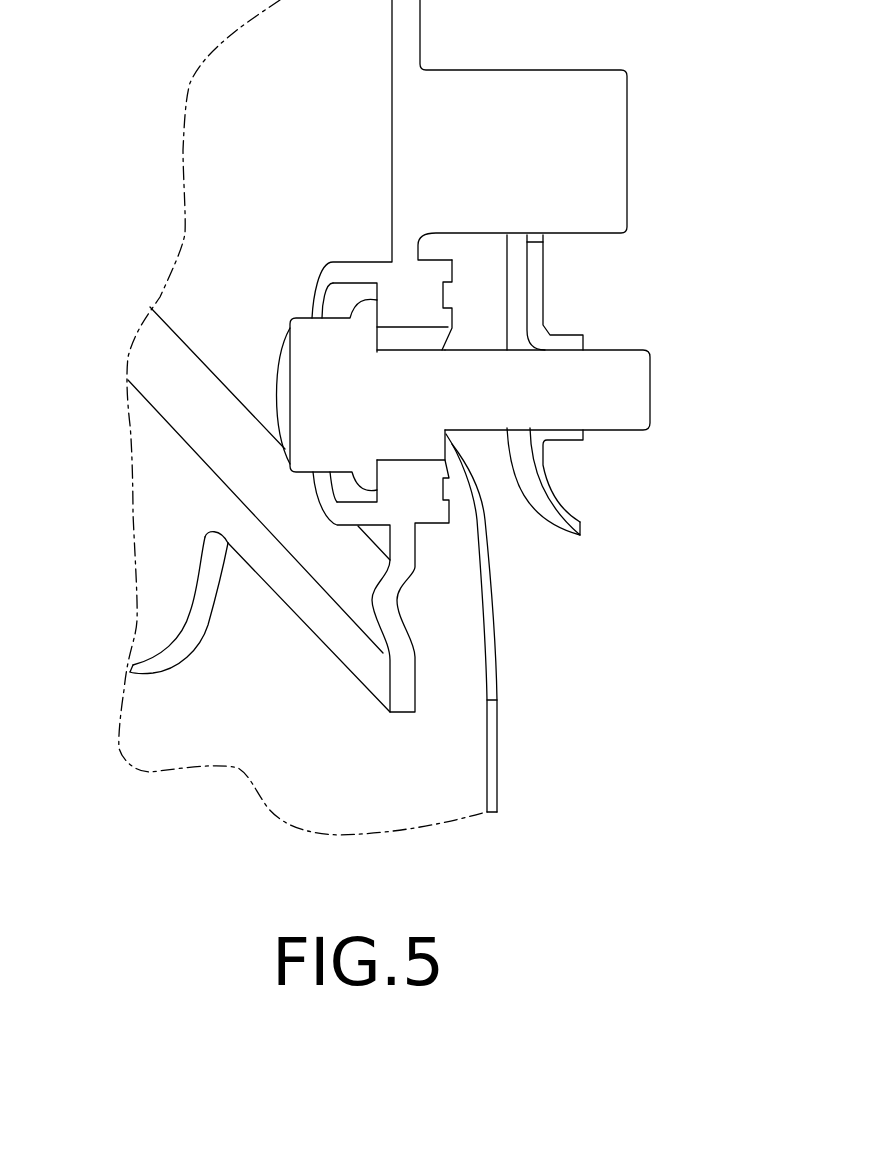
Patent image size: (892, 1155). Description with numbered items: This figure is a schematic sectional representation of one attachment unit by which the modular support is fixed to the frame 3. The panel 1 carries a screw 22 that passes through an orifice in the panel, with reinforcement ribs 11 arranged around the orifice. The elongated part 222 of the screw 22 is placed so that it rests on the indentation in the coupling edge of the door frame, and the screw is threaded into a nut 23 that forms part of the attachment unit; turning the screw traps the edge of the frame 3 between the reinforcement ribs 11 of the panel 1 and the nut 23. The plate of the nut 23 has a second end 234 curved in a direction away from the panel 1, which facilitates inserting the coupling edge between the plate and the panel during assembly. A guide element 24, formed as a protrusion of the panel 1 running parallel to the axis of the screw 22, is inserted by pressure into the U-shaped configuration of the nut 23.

The panel 1 is at (234, 278).
The reinforcement ribs 11 is at (438, 271).
The screw 22 is at (653, 360).
The elongated part of the screw 222 is at (277, 400).
The nut 23 is at (567, 298).
The second end of the plate 234 is at (547, 466).
The guide element 24 is at (573, 203).
The frame 3 is at (508, 800).